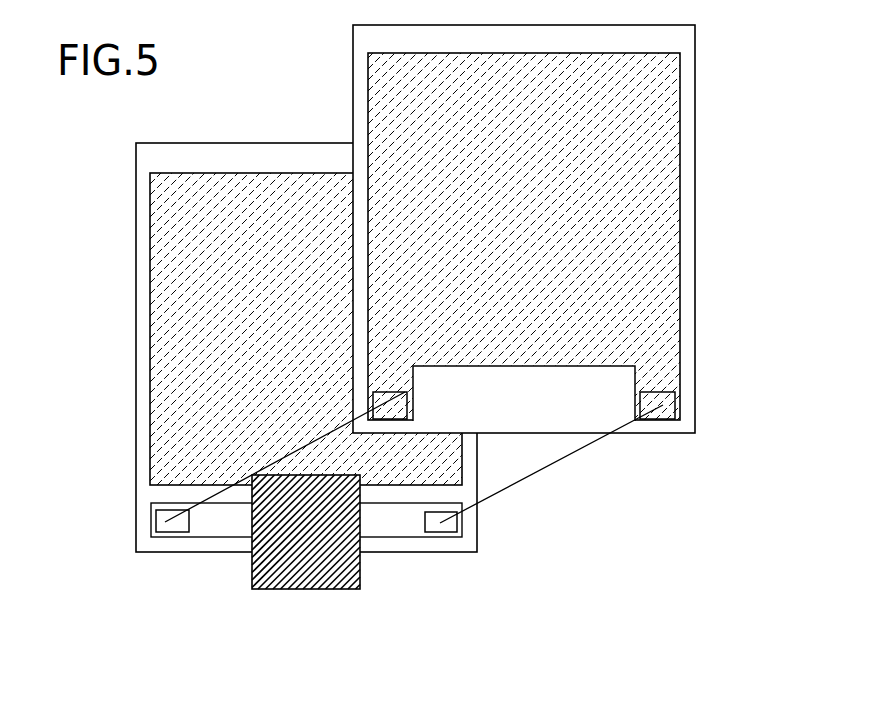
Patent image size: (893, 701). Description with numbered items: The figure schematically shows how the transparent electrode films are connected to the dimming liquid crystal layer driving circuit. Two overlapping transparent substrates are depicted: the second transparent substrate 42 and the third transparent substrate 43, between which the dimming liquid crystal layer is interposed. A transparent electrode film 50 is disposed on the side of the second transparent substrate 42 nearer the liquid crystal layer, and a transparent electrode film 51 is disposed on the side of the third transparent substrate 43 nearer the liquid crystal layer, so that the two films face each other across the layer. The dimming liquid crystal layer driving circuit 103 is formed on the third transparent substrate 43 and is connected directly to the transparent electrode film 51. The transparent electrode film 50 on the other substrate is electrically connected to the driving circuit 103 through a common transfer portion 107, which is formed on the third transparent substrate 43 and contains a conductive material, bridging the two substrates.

The second transparent substrate 42 is at (668, 40).
The third transparent substrate 43 is at (168, 158).
The transparent electrode film 50 is at (668, 258).
The transparent electrode film 51 is at (168, 378).
The dimming liquid crystal layer driving circuit 103 is at (290, 590).
The common transfer portion 107 is at (168, 520).